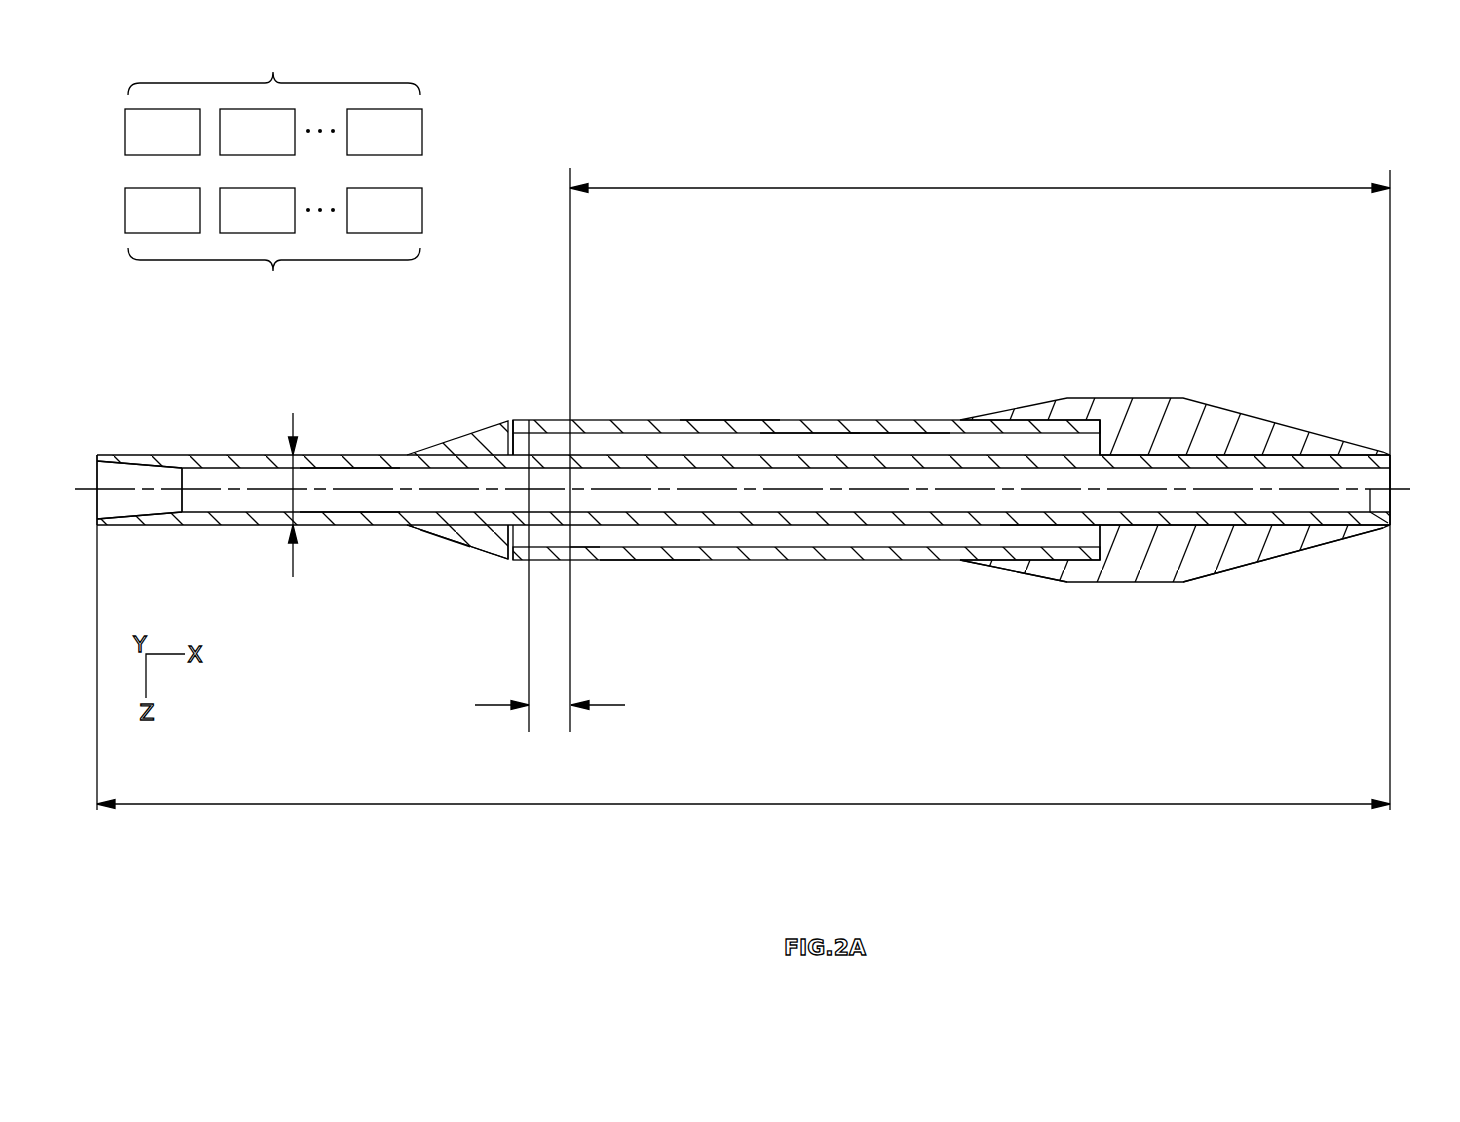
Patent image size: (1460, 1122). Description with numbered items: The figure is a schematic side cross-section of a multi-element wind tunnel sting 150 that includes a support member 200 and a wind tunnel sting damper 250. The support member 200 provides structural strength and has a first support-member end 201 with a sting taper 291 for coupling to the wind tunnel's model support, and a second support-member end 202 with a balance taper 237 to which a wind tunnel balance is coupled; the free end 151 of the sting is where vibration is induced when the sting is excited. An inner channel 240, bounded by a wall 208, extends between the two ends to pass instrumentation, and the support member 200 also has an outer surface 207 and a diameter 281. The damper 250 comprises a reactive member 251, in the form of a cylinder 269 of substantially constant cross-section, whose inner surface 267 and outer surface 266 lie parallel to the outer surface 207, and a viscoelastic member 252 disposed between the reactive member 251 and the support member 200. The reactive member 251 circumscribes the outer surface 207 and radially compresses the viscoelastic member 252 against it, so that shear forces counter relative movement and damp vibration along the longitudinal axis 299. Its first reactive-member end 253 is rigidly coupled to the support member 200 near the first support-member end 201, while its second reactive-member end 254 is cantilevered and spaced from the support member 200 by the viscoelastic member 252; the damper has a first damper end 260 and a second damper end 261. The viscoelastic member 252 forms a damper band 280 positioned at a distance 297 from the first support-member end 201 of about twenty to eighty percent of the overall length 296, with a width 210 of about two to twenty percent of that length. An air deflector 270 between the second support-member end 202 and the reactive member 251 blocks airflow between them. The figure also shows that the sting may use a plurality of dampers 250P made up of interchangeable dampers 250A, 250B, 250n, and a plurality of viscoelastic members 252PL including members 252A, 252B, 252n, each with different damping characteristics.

The wind tunnel sting 150 is at (872, 312).
The free end 151 is at (175, 418).
The support member 200 is at (1225, 404).
The first support-member end 201 is at (1398, 516).
The second support-member end 202 is at (93, 450).
The outer surface 207 is at (378, 455).
The wall 208 is at (380, 472).
The width 210 is at (548, 707).
The balance taper 237 is at (160, 503).
The inner channel 240 is at (1051, 499).
The wind tunnel sting damper 250 is at (662, 417).
The plurality of sleeves 250P is at (274, 69).
The wind tunnel sting damper 250A is at (189, 144).
The wind tunnel sting damper 250B is at (284, 144).
The wind tunnel sting damper 250n is at (411, 144).
The reactive member 251 is at (713, 420).
The viscoelastic member 252 is at (542, 447).
The plurality of viscoelastic members 252PL is at (274, 274).
The viscoelastic member 252A is at (189, 222).
The viscoelastic member 252B is at (284, 222).
The viscoelastic member 252n is at (411, 222).
The first reactive-member end 253 is at (948, 417).
The second reactive-member end 254 is at (508, 572).
The first damper end 260 is at (953, 570).
The second damper end 261 is at (557, 417).
The outer surface 266 is at (795, 419).
The inner surface 267 is at (862, 432).
The cylinder 269 is at (348, 520).
The air deflector 270 is at (445, 537).
The damper band 280 is at (577, 542).
The diameter 281 is at (290, 478).
The sting taper 291 is at (1250, 562).
The overall length 296 is at (733, 804).
The distance 297 is at (1002, 188).
The longitudinal axis 299 is at (224, 493).